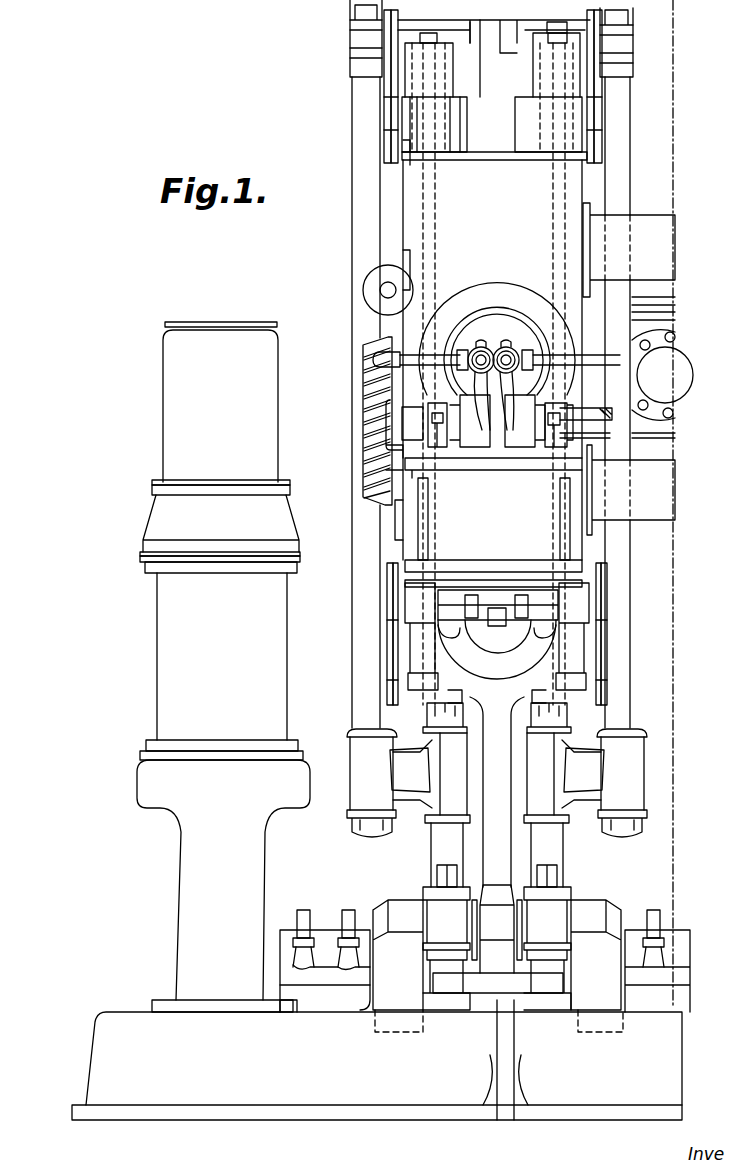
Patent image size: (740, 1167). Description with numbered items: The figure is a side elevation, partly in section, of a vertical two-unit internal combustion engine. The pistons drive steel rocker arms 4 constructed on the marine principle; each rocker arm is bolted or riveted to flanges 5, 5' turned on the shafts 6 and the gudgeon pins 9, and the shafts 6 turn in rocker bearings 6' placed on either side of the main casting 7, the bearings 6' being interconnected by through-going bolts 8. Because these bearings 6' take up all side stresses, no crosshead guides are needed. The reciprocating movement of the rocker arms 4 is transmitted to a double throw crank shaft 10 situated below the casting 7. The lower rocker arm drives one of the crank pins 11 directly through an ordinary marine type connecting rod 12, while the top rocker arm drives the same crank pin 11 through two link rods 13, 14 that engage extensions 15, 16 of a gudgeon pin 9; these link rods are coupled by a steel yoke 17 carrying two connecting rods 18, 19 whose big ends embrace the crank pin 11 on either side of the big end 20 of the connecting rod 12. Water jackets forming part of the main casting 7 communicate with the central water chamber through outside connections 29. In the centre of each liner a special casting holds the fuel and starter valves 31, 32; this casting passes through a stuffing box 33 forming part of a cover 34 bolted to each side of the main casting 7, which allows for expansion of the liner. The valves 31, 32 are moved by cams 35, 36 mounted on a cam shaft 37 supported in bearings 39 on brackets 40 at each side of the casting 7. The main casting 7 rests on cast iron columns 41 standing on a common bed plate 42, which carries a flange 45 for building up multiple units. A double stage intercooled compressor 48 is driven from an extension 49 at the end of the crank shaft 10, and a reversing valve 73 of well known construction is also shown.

The rocker arms 4 is at (389, 153).
The flange 5 is at (485, 352).
The flange 5' is at (487, 367).
The shafts 6 is at (393, 52).
The bearings 6' is at (456, 86).
The main casting 7 is at (503, 296).
The through-going bolts 8 is at (430, 35).
The gudgeon pins 9 is at (548, 30).
The double throw crank shaft 10 is at (328, 942).
The crank pins 11 is at (440, 930).
The connecting rod 12 is at (497, 753).
The link rod 13 is at (360, 252).
The link rod 14 is at (618, 251).
The extension 15 is at (350, 45).
The extension 16 is at (634, 52).
The steel yoke 17 is at (497, 770).
The connecting rod 18 is at (440, 845).
The connecting rod 19 is at (558, 845).
The big end 20 is at (497, 948).
The outside connections 29 is at (377, 290).
The fuel valve 31 is at (512, 346).
The air starting valve 32 is at (480, 346).
The stuffing box 33 is at (500, 318).
The cover 34 is at (487, 288).
The cam 35 is at (535, 430).
The cam 36 is at (472, 448).
The cam shaft 37 is at (370, 430).
The bearings 39 is at (440, 448).
The brackets 40 is at (422, 514).
The cast iron columns 41 is at (463, 592).
The bed plate 42 is at (268, 1087).
The flange 45 is at (520, 1090).
The double stage intercooled compressor 48 is at (170, 600).
The extension 49 is at (283, 960).
The reversing valve 73 is at (662, 367).